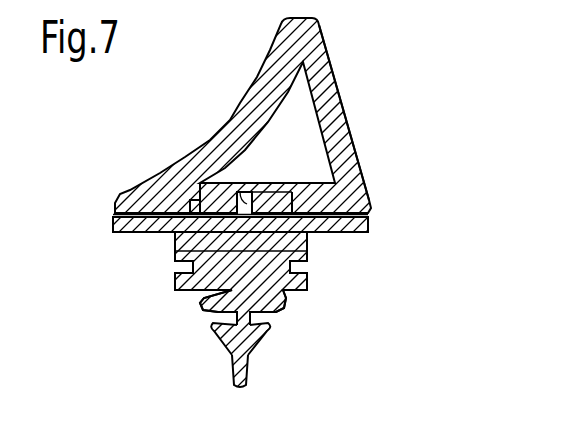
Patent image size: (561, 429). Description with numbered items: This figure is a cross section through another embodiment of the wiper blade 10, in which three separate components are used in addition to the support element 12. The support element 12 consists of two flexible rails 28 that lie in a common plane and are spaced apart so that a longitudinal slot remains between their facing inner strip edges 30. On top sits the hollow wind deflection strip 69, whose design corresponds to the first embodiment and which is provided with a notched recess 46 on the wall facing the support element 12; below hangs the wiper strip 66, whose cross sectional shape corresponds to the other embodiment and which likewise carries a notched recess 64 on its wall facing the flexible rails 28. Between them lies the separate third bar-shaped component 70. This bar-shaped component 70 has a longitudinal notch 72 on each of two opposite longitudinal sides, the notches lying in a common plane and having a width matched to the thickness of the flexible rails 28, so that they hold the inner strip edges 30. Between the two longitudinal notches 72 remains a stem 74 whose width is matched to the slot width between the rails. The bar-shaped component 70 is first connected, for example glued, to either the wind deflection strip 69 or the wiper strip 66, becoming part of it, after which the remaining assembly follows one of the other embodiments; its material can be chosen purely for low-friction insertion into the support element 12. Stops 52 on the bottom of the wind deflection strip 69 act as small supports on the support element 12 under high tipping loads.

The wiper blade 10 is at (377, 190).
The support element 12 is at (369, 227).
The flexible rails 28 is at (119, 234).
The inner strip edges 30 is at (180, 257).
The notched recess 46 is at (319, 128).
The stops 52 is at (372, 213).
The notched recess 64 is at (199, 298).
The wiper strip 66 is at (283, 328).
The wind deflection strip 69 is at (358, 141).
The bar-shaped component 70 is at (230, 184).
The longitudinal notches 72 is at (182, 204).
The stem 74 is at (203, 284).